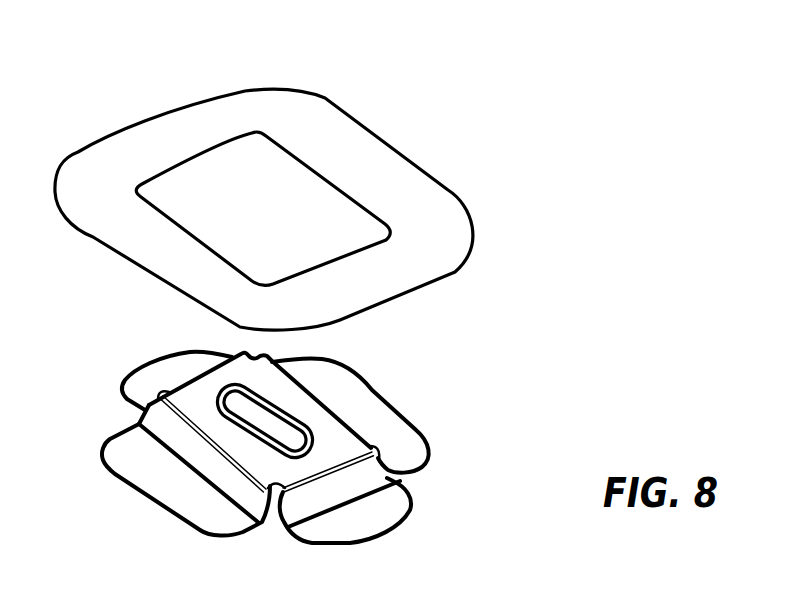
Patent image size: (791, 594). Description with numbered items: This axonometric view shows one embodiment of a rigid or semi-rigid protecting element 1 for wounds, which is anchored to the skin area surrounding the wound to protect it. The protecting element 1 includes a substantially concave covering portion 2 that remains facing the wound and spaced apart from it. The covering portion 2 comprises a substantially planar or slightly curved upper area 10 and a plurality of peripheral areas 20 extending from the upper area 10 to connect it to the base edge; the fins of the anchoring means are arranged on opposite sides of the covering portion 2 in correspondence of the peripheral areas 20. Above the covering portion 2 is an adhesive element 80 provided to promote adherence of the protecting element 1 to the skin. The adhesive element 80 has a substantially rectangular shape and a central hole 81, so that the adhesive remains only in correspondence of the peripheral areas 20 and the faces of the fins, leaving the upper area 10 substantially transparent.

The protecting element 1 is at (560, 97).
The adhesive element 80 is at (310, 208).
The central hole 81 is at (308, 215).
The covering portion 2 is at (84, 367).
The upper area 10 is at (348, 437).
The peripheral areas 20 is at (453, 432).